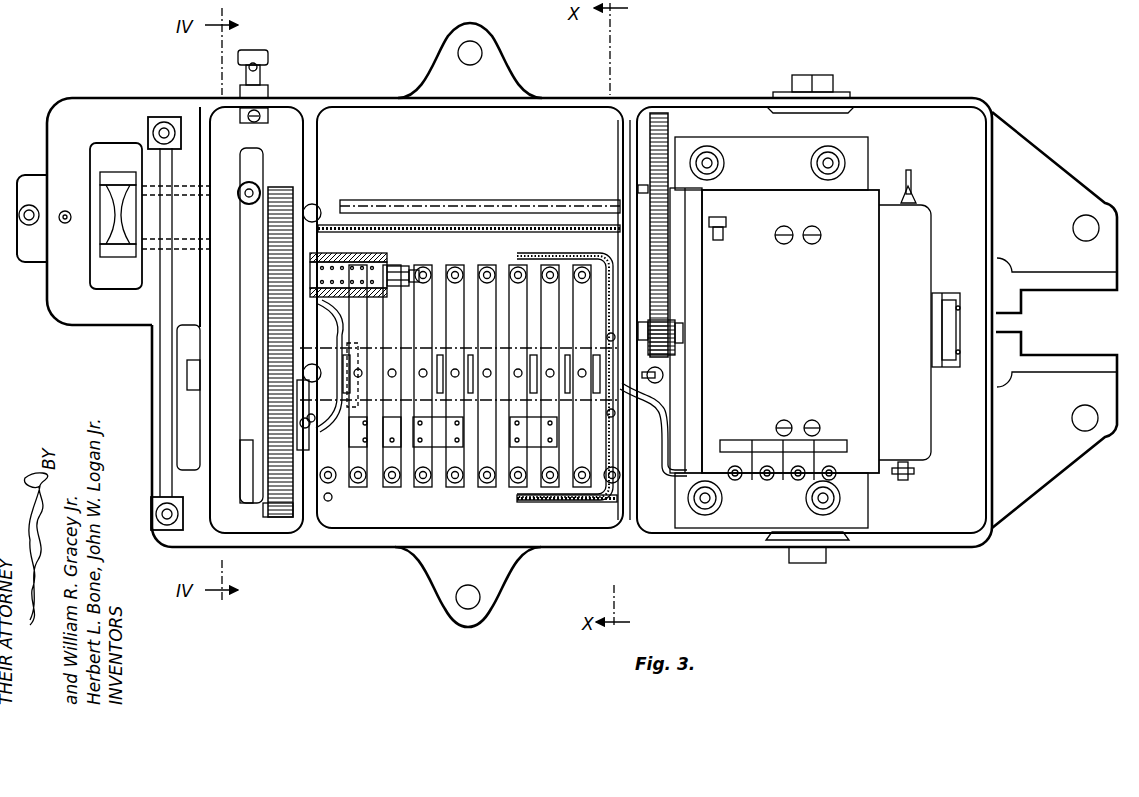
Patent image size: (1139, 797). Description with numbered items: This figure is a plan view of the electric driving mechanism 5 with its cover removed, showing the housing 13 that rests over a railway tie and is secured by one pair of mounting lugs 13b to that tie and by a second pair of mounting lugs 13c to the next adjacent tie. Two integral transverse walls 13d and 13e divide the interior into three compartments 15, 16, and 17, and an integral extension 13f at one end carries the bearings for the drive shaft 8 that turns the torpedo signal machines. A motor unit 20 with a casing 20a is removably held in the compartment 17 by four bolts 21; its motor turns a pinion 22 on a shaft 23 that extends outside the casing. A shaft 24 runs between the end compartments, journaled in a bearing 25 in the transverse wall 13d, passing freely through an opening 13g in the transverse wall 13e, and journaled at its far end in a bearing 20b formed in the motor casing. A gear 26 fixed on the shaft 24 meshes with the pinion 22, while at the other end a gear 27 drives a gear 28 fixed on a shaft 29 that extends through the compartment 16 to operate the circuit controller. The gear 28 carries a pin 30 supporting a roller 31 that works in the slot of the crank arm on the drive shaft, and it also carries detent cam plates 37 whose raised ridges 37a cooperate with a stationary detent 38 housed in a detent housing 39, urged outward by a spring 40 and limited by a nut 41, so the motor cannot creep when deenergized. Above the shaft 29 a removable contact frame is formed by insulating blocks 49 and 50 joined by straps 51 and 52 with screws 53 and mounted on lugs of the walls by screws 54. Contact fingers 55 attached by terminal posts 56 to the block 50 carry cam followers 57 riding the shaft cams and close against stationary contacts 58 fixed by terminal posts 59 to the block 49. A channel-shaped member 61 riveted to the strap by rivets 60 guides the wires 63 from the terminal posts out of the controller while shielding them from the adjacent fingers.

The electric driving mechanism 5 is at (645, 57).
The drive shaft 8 is at (146, 183).
The housing 13 is at (720, 548).
The mounting lugs 13b is at (520, 63).
The mounting lugs 13c is at (1055, 160).
The transverse wall 13d is at (312, 140).
The transverse wall 13e is at (622, 128).
The integral extension 13f is at (87, 110).
The opening 13g is at (616, 160).
The end compartment 15 is at (295, 148).
The middle compartment 16 is at (444, 138).
The end compartment 17 is at (766, 137).
The motor unit 20 is at (903, 166).
The motor casing 20a is at (825, 325).
The bearing 20b is at (681, 195).
The bolts 21 is at (811, 163).
The pinion 22 is at (670, 375).
The pinion shaft 23 is at (690, 330).
The shaft 24 is at (446, 200).
The bearing 25 is at (332, 196).
The gear 26 is at (661, 113).
The gear 27 is at (284, 190).
The gear 28 is at (280, 518).
The shaft 29 is at (432, 462).
The pin 30 is at (247, 478).
The roller 31 is at (195, 323).
The detent cam plates 37 is at (308, 445).
The raised ridge 37a is at (300, 425).
The detent 38 is at (340, 197).
The detent housing 39 is at (399, 261).
The spring 40 is at (348, 266).
The nut 41 is at (421, 262).
The insulating block 49 is at (558, 503).
The insulating block 50 is at (527, 242).
The strap 51 is at (607, 505).
The strap 52 is at (332, 498).
The screws 53 is at (612, 240).
The screws 54 is at (607, 258).
The contact fingers 55 is at (455, 268).
The terminal posts 56 is at (423, 268).
The cam follower 57 is at (487, 268).
The stationary contacts 58 is at (468, 475).
The terminal posts 59 is at (503, 475).
The rivets 60 is at (636, 400).
The channel-shaped member 61 is at (628, 452).
The wires 63 is at (500, 226).